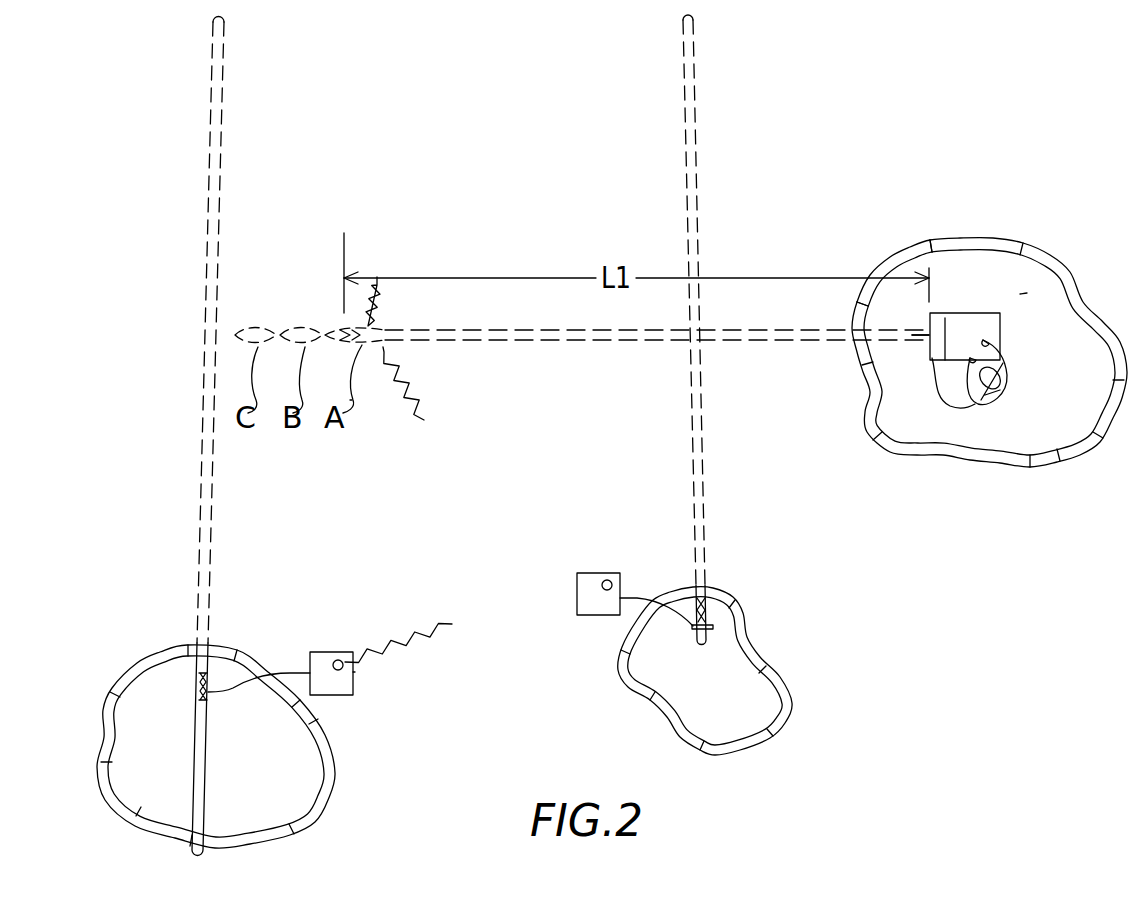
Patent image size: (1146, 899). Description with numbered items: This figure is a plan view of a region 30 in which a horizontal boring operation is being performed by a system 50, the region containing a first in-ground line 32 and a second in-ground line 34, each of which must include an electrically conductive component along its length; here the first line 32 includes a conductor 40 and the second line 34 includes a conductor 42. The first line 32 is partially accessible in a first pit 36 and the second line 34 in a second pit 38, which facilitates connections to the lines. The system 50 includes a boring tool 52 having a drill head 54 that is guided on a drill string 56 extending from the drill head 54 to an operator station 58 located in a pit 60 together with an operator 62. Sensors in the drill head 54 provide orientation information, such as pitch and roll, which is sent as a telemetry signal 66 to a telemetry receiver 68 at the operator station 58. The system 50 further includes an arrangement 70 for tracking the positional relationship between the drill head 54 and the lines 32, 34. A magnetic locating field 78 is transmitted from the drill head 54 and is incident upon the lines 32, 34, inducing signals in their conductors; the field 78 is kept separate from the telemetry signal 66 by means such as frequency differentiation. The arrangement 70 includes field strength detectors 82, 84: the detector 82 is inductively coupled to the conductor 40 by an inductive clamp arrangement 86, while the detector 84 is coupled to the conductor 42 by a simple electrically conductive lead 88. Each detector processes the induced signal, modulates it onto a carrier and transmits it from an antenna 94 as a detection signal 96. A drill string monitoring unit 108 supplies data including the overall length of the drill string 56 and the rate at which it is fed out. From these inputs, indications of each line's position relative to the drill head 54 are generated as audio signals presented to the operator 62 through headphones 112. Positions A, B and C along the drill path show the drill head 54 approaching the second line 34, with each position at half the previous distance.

The region 30 is at (404, 176).
The first in-ground line 32 is at (697, 160).
The second in-ground line 34 is at (222, 193).
The first pit 36 is at (750, 713).
The second pit 38 is at (275, 770).
The conductor 40 is at (708, 610).
The conductor 42 is at (212, 678).
The system 50 is at (828, 172).
The boring tool 52 is at (987, 313).
The drill head 54 is at (388, 328).
The drill string 56 is at (577, 330).
The operator station 58 is at (1027, 293).
The pit 60 is at (1050, 436).
The operator 62 is at (977, 408).
The telemetry signal 66 is at (412, 388).
The telemetry receiver 68 is at (937, 322).
The arrangement 70 is at (828, 263).
The magnetic locating field 78 is at (376, 296).
The field strength detector 82 is at (585, 573).
The field strength detector 84 is at (330, 652).
The inductive clamp arrangement 86 is at (693, 615).
The electrically conductive lead 88 is at (292, 672).
The antenna 94 is at (353, 670).
The detection signal 96 is at (393, 645).
The drill string monitoring unit 108 is at (873, 398).
The headphones 112 is at (1010, 378).